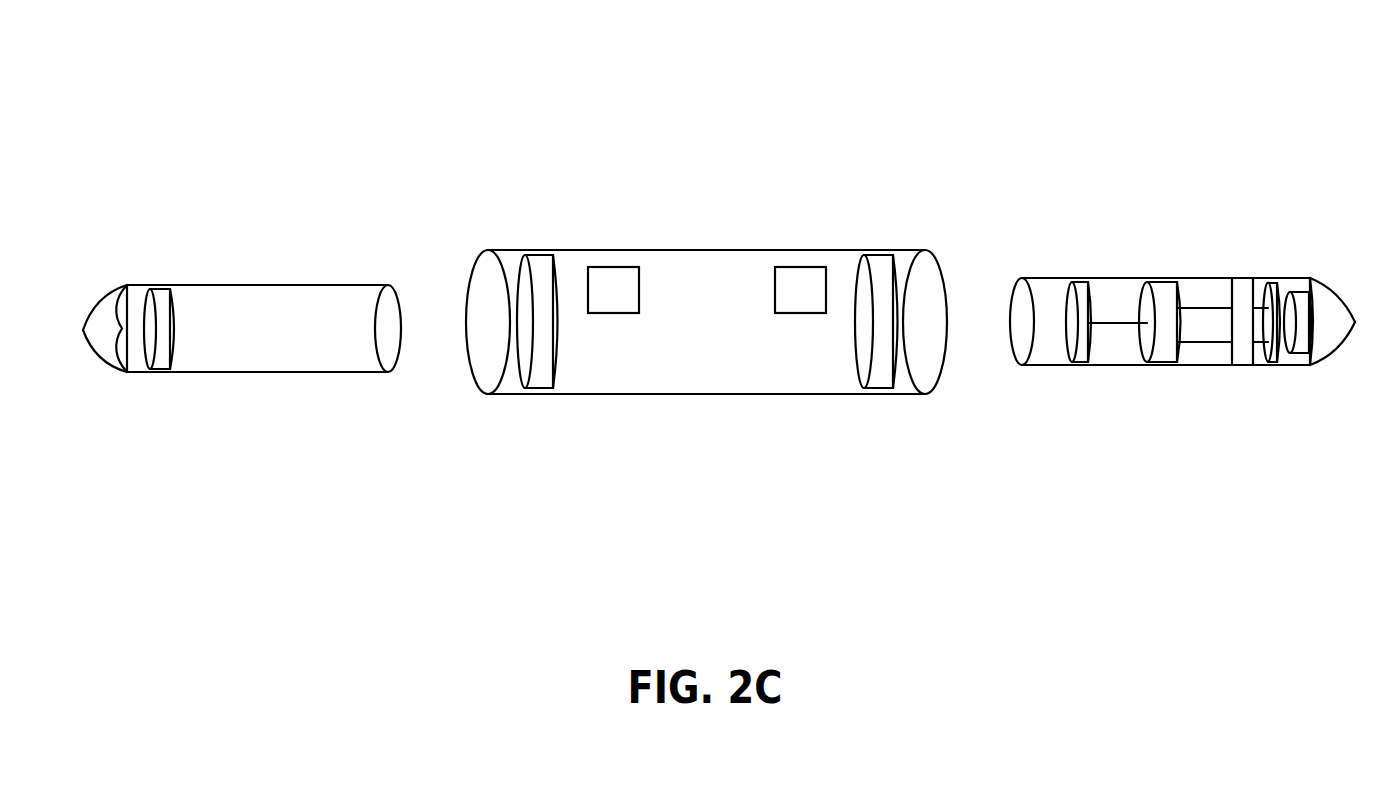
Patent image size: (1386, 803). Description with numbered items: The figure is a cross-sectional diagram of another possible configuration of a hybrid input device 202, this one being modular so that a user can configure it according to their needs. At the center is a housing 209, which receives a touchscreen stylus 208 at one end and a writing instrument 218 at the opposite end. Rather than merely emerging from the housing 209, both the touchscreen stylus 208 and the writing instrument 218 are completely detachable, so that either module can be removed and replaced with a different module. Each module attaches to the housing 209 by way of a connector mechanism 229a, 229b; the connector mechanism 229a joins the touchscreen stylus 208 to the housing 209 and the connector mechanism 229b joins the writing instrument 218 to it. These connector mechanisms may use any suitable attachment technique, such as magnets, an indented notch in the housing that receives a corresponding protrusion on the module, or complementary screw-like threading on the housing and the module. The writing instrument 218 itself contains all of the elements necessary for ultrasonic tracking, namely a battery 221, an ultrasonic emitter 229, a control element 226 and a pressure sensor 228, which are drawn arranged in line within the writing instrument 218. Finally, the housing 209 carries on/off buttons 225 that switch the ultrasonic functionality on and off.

The hybrid input device 202 is at (968, 92).
The touchscreen stylus 208 is at (262, 285).
The housing 209 is at (560, 248).
The writing instrument 218 is at (1045, 277).
The battery 221 is at (1080, 288).
The on/off buttons 225 is at (612, 278).
The control element 226 is at (1162, 353).
The pressure sensor 228 is at (1305, 345).
The ultrasonic emitter 229 is at (1240, 290).
The connector mechanism 229a is at (163, 335).
The connector mechanism 229b is at (888, 337).